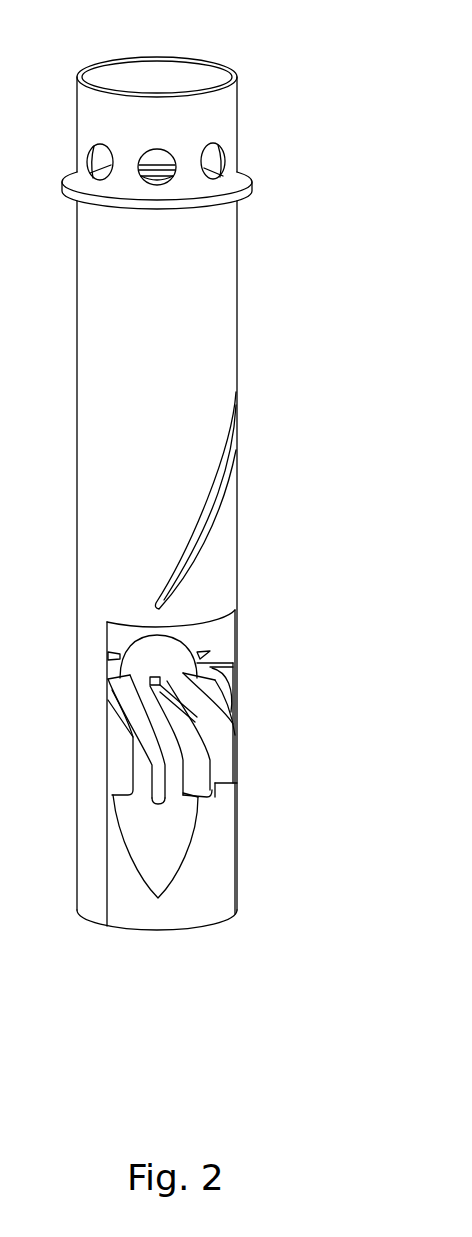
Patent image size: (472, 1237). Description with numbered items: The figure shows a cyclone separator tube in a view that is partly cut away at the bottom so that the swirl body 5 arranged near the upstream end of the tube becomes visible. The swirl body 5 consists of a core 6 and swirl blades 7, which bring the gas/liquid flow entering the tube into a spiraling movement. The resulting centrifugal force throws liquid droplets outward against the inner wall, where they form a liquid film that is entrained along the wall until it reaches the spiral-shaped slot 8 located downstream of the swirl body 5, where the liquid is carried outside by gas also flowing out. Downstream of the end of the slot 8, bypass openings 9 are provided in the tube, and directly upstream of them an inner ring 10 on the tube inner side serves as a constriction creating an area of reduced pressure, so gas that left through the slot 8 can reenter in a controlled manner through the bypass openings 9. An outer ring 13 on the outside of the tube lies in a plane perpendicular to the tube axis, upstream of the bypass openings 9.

The swirl body 5 is at (200, 851).
The core 6 is at (175, 820).
The swirl blades 7 is at (217, 708).
The spiral-shaped slot 8 is at (237, 458).
The bypass openings 9 is at (157, 155).
The inner ring 10 is at (176, 163).
The outer ring 13 is at (253, 183).